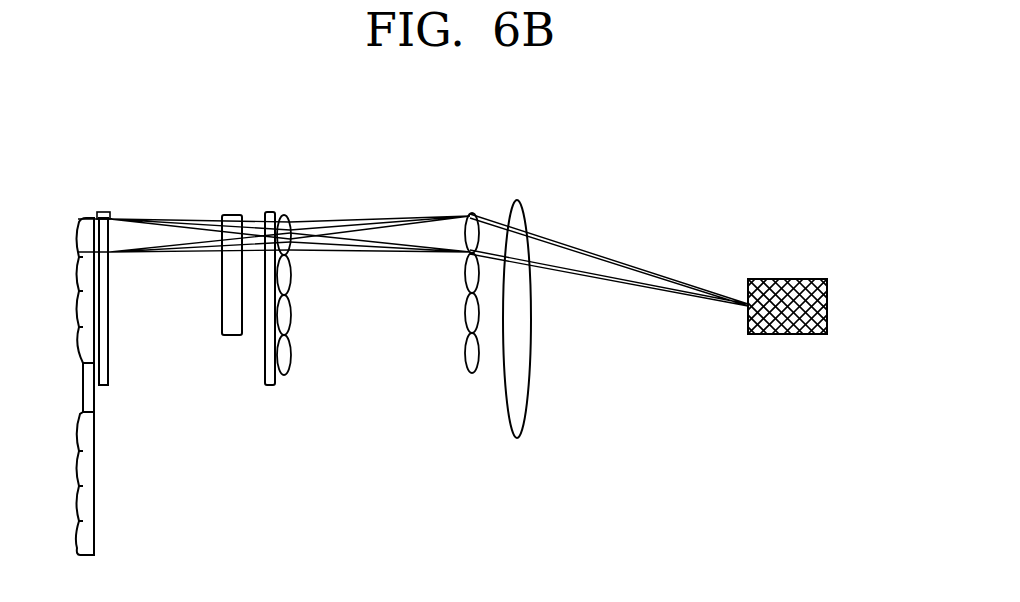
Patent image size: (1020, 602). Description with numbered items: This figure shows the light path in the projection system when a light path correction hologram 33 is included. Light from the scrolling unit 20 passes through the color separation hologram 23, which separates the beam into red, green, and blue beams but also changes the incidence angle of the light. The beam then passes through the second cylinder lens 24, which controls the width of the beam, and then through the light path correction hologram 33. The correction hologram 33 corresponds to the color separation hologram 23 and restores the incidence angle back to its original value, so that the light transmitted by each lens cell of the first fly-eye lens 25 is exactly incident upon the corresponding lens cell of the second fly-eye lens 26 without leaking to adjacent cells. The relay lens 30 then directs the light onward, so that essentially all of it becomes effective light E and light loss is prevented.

The scrolling unit 20 is at (85, 214).
The color separation hologram 23 is at (104, 211).
The second cylinder lens 24 is at (232, 213).
The light path correction hologram 33 is at (270, 210).
The first fly-eye lens 25 is at (288, 214).
The second fly-eye lens 26 is at (471, 212).
The relay lens 30 is at (517, 199).
The effective light E is at (827, 307).